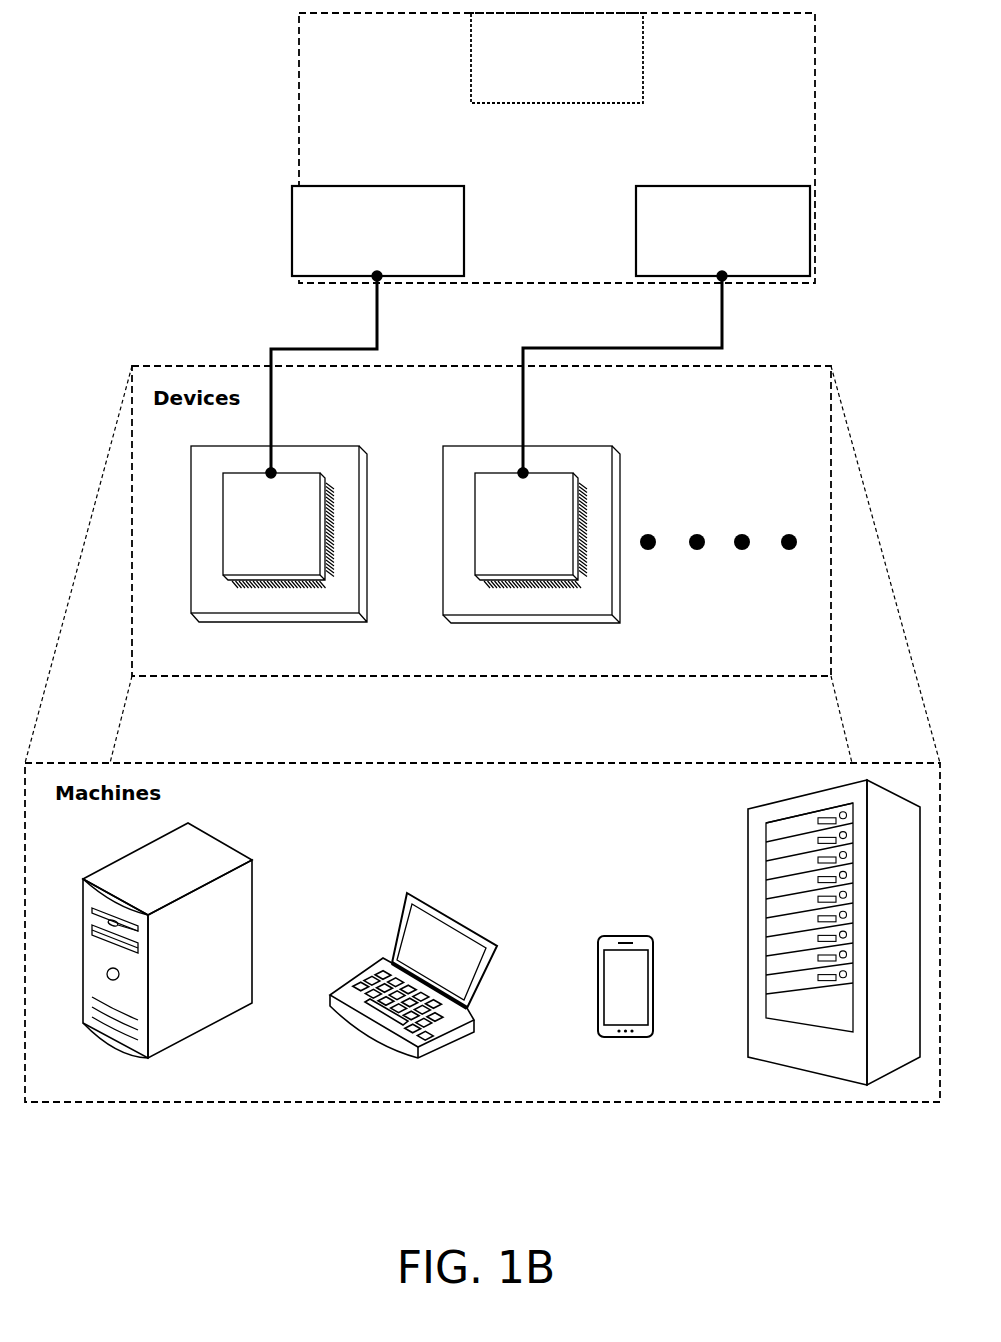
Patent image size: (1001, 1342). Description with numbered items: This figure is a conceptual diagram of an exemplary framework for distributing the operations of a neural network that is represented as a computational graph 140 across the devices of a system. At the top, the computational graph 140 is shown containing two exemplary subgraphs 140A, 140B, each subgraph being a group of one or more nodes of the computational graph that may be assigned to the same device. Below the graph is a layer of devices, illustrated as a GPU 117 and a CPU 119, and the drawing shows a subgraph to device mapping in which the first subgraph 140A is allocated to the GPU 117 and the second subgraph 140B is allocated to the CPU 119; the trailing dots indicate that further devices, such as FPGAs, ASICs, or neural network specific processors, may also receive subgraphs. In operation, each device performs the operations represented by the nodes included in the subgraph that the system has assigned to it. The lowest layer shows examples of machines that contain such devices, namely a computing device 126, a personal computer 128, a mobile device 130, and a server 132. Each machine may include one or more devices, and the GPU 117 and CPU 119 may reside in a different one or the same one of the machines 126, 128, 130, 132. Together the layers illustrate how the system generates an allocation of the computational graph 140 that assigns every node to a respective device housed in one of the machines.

The computational graph 140 is at (577, 187).
The subgraph 140A is at (378, 231).
The subgraph 140B is at (723, 231).
The GPU 117 is at (279, 534).
The CPU 119 is at (531, 534).
The computing device 126 is at (233, 842).
The personal computer 128 is at (395, 918).
The mobile device 130 is at (628, 935).
The server 132 is at (748, 839).